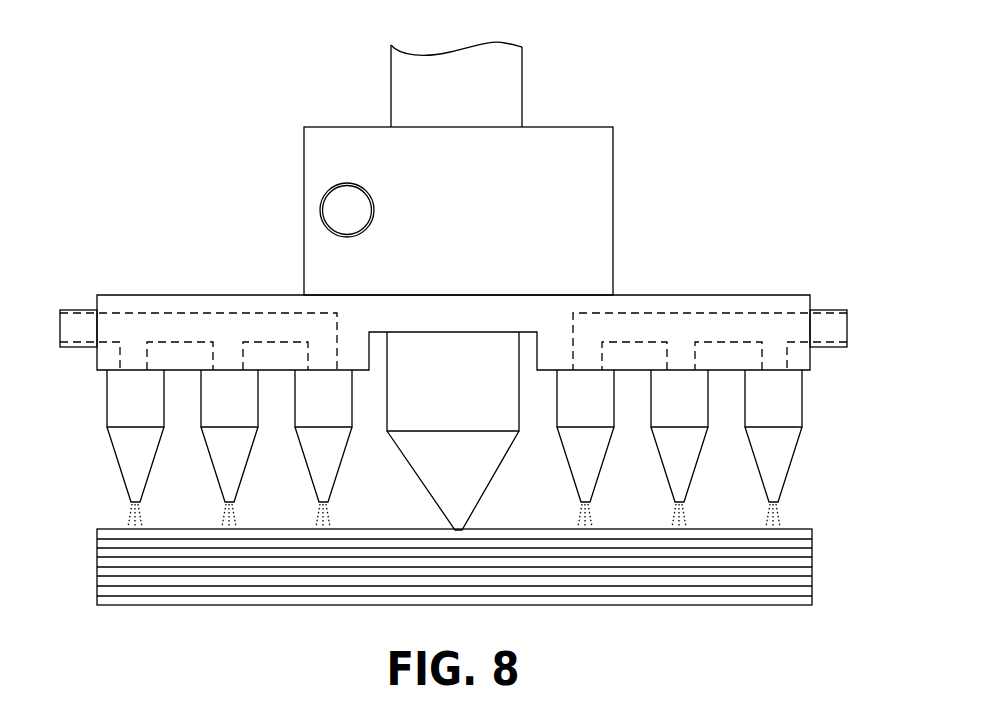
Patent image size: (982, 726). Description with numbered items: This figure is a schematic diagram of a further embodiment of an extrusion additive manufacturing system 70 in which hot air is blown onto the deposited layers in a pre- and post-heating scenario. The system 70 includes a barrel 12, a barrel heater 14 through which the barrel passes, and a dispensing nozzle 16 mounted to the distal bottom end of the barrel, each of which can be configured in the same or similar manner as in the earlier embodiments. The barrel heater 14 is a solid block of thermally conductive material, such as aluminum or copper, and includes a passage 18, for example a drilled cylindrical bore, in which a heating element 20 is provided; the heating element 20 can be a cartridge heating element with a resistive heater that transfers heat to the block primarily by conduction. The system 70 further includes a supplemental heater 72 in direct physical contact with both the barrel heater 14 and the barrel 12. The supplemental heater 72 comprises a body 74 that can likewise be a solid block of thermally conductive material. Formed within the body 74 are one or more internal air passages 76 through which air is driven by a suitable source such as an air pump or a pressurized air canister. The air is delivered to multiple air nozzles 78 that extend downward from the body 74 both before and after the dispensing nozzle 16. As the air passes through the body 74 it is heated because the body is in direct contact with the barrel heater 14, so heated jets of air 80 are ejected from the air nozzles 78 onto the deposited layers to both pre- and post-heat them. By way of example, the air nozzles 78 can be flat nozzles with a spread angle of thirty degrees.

The barrel 12 is at (523, 60).
The barrel heater 14 is at (445, 224).
The dispensing nozzle 16 is at (440, 484).
The passage 18 is at (320, 203).
The heating element 20 is at (334, 222).
The extrusion AM system 70 is at (797, 101).
The supplemental heater 72 is at (785, 258).
The body 74 is at (117, 294).
The internal air passages 76 is at (228, 322).
The air nozzles 78 is at (122, 461).
The heated jets of air 80 is at (776, 521).